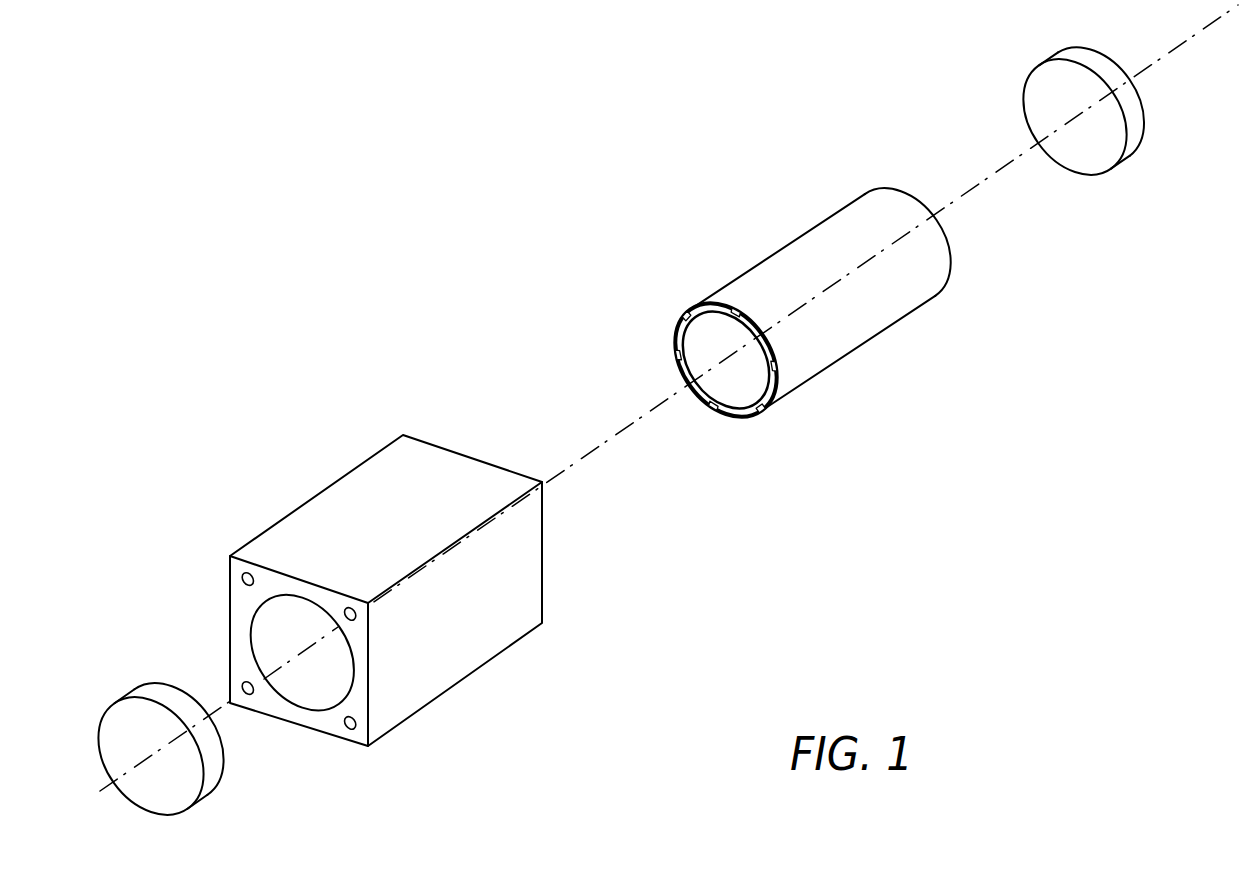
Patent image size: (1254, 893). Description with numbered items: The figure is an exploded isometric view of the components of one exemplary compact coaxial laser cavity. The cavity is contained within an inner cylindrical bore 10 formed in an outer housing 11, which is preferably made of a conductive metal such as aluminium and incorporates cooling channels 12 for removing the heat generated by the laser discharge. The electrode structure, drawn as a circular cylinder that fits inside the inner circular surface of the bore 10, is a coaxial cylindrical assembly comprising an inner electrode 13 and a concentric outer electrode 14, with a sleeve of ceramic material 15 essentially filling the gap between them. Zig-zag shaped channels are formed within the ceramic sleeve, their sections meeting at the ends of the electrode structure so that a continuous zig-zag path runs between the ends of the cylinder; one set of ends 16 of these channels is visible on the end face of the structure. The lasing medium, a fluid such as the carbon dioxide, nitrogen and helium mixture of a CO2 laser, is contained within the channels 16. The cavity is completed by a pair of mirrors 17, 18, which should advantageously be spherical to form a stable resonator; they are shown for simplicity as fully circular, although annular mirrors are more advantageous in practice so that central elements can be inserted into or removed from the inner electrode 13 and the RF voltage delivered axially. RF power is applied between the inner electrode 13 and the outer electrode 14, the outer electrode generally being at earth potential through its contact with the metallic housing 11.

The inner cylindrical bore 10 is at (253, 633).
The outer housing 11 is at (320, 493).
The cooling channels 12 is at (357, 733).
The inner electrode 13 is at (761, 379).
The outer electrode 14 is at (674, 331).
The sleeve of ceramic material 15 is at (697, 396).
The ends of the channels 16 is at (712, 410).
The mirror 17 is at (227, 761).
The mirror 18 is at (1145, 106).